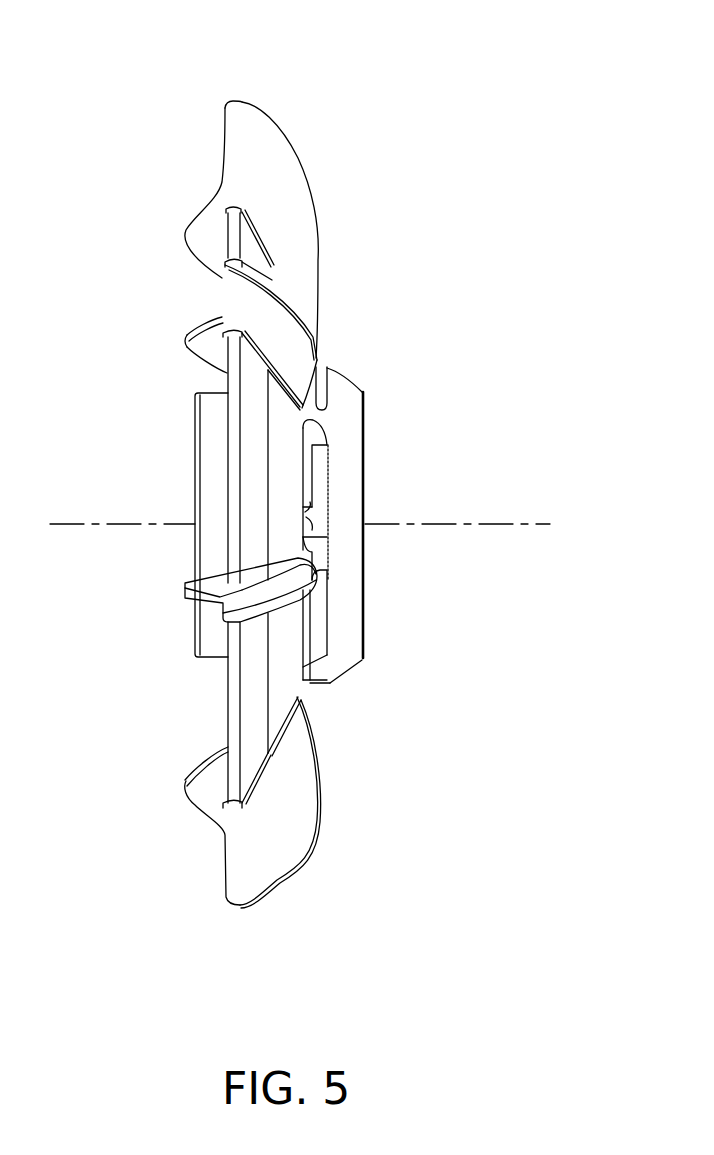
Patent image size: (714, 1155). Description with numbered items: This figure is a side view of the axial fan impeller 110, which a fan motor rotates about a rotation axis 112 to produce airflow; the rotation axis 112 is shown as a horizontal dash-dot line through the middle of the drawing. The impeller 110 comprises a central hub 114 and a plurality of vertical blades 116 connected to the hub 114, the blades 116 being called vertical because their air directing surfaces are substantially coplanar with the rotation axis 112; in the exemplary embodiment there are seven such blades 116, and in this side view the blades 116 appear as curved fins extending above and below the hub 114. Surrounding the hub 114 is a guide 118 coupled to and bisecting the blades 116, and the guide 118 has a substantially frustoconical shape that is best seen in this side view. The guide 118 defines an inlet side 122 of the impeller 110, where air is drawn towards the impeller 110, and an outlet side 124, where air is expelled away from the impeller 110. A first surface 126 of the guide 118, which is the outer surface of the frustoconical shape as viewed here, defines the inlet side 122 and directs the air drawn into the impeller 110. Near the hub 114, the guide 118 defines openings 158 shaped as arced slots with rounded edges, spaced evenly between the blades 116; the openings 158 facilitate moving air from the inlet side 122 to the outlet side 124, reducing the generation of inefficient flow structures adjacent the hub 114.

The impeller 110 is at (282, 108).
The outlet side 124 is at (178, 316).
The inlet side 122 is at (367, 372).
The central hub 114 is at (362, 420).
The rotation axis 112 is at (490, 524).
The openings 158 is at (314, 510).
The first surface 126 is at (287, 678).
The guide 118 is at (232, 700).
The vertical blades 116 is at (270, 858).